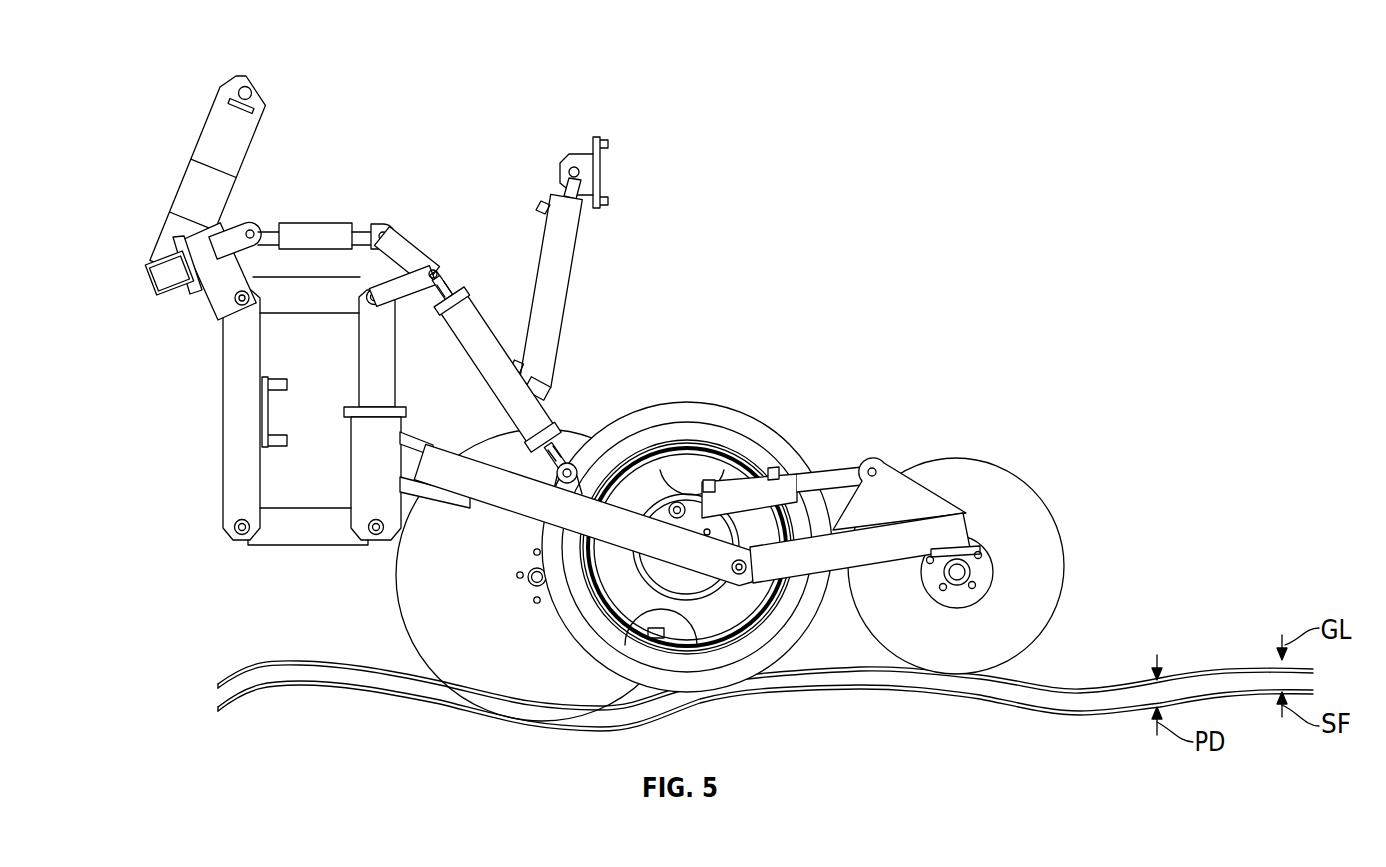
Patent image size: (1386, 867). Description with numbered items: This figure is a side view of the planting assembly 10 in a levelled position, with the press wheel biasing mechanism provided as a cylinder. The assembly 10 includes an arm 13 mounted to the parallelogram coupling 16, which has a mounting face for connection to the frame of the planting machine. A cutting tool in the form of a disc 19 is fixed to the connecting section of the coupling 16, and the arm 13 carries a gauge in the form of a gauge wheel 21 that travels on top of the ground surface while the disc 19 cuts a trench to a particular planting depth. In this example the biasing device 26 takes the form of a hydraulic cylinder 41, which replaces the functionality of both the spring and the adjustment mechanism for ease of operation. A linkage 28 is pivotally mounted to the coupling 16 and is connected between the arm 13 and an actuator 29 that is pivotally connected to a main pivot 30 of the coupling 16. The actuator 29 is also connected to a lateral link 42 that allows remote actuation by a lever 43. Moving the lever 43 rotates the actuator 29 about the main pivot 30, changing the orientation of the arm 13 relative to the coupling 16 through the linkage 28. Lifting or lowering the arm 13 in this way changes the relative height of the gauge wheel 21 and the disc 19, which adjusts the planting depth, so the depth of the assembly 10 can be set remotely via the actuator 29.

The planting assembly 10 is at (978, 236).
The arm 13 is at (513, 513).
The parallelogram coupling 16 is at (297, 545).
The disc 19 is at (577, 432).
The gauge wheel 21 is at (732, 403).
The biasing device 26 is at (823, 470).
The linkage 28 is at (418, 243).
The actuator 29 is at (153, 293).
The main pivot 30 is at (250, 308).
The hydraulic cylinder 41 is at (788, 470).
The lateral link 42 is at (147, 271).
The lever 43 is at (246, 86).